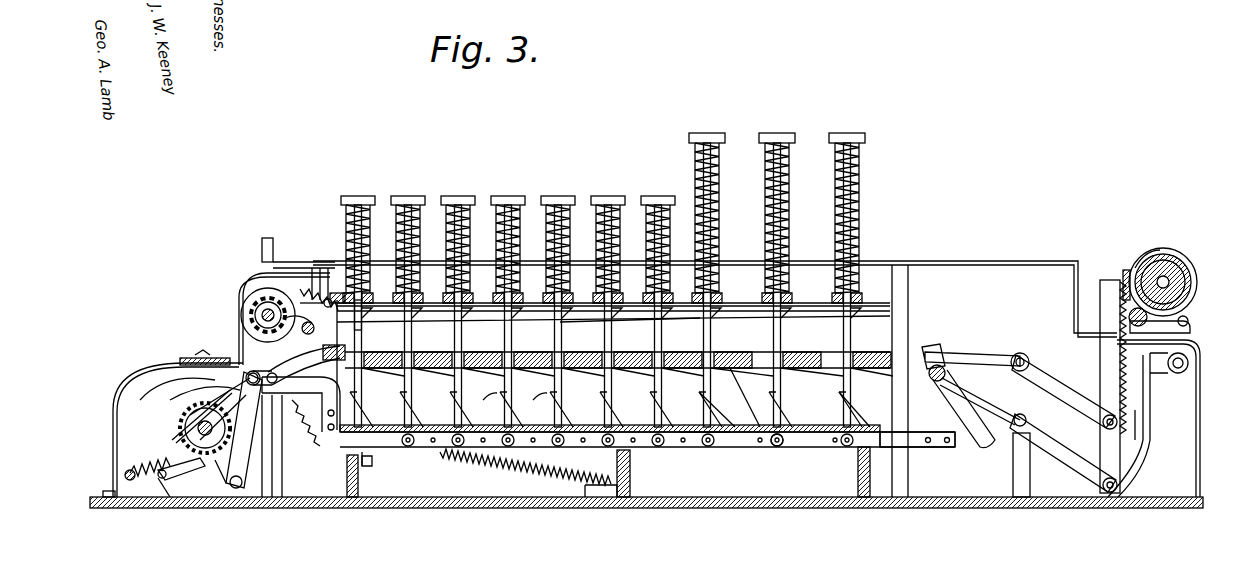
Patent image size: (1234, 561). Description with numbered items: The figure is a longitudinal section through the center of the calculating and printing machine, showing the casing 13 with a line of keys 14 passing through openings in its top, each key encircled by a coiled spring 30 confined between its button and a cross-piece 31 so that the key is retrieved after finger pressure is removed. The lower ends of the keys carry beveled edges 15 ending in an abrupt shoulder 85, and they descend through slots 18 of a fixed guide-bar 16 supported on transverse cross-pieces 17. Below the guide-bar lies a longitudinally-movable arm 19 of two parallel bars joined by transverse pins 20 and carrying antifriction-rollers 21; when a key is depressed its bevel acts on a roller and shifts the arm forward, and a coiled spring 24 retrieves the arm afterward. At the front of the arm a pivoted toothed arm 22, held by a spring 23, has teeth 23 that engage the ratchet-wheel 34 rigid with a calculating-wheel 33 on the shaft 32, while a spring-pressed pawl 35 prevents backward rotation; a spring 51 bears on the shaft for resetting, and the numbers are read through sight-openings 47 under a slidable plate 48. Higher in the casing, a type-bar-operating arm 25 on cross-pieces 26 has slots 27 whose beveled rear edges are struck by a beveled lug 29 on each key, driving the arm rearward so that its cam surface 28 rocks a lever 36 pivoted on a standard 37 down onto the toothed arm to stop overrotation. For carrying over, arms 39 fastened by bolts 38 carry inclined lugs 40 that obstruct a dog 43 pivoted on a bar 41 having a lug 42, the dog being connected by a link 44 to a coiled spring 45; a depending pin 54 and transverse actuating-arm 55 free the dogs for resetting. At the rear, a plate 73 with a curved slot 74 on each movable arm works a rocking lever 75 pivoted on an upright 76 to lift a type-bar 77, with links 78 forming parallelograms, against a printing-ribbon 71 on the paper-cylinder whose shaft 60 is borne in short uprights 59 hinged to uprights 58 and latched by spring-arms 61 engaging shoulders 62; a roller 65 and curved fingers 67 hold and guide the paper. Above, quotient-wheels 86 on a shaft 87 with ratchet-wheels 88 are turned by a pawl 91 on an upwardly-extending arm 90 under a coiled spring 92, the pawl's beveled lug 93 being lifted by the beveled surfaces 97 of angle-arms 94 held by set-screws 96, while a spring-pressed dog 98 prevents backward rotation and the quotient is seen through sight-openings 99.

The casing 13 is at (980, 262).
The keys 14 is at (690, 140).
The beveled edges 15 is at (755, 405).
The guide-bars 16 is at (388, 425).
The cross-pieces 17 is at (353, 497).
The slots 18 is at (540, 430).
The longitudinally-movable arm 19 is at (699, 447).
The transverse pins 20 is at (540, 442).
The antifriction-rollers 21 is at (777, 447).
The pivoted toothed arm 22 is at (155, 378).
The teeth 23 is at (305, 440).
The coiled spring 24 is at (520, 480).
The type-bar-operating arms 25 is at (970, 352).
The cross-pieces 26 is at (845, 380).
The slots 27 is at (765, 355).
The cam surface 28 is at (350, 352).
The beveled lug 29 is at (580, 322).
The coiled spring 30 is at (858, 214).
The cross-piece 31 is at (728, 303).
The shaft 32 is at (205, 436).
The calculating-wheels 33 is at (150, 423).
The ratchet-wheel 34 is at (215, 500).
The spring-pressed pawl 35 is at (182, 477).
The lever 36 is at (262, 318).
The standard 37 is at (275, 497).
The bolts 38 is at (334, 413).
The arms 39 is at (290, 393).
The inclined lugs 40 is at (185, 358).
The bars 41 is at (240, 460).
The lug 42 is at (243, 429).
The dog 43 is at (256, 370).
The link 44 is at (180, 410).
The coiled spring 45 is at (128, 470).
The sight-openings 47 is at (205, 344).
The slidable plate 48 is at (187, 358).
The spring 51 is at (1197, 278).
The depending pin 54 is at (366, 466).
The actuating-arm 55 is at (372, 466).
The uprights 58 is at (1165, 440).
The short uprights 59 is at (1190, 330).
The shaft 60 is at (1172, 258).
The spring-arms 61 is at (1140, 415).
The shoulders 62 is at (1155, 372).
The roller 65 is at (1128, 318).
The curved fingers 67 is at (1145, 248).
The printing-ribbon 71 is at (1123, 280).
The plate 73 is at (965, 447).
The curved slot 74 is at (965, 405).
The rocking levers 75 is at (1062, 448).
The uprights 76 is at (1030, 484).
The type-bar 77 is at (1100, 296).
The links 78 is at (1060, 390).
The shoulder 85 is at (492, 395).
The quotient-wheels 86 is at (250, 300).
The shaft 87 is at (300, 326).
The ratchet-wheel 88 is at (255, 300).
The upwardly-extending arm 90 is at (362, 300).
The pawl 91 is at (308, 285).
The coiled spring 92 is at (245, 290).
The beveled lug 93 is at (337, 290).
The angle-arms 94 is at (266, 238).
The set-screws 96 is at (312, 265).
The beveled surfaces 97 is at (325, 265).
The spring-pressed dog 98 is at (325, 352).
The sight-openings 99 is at (262, 268).